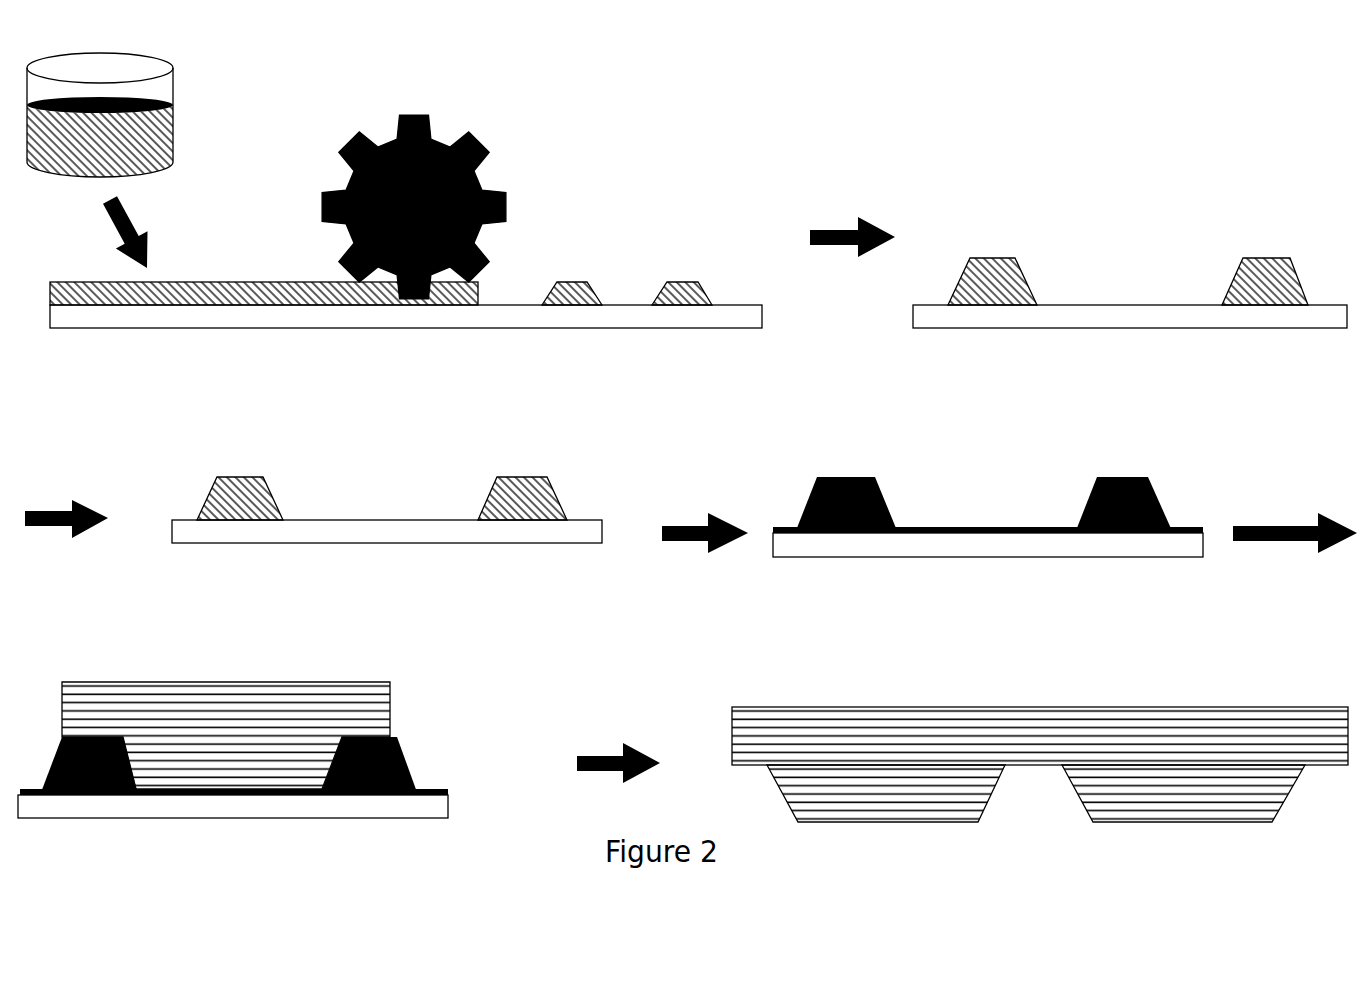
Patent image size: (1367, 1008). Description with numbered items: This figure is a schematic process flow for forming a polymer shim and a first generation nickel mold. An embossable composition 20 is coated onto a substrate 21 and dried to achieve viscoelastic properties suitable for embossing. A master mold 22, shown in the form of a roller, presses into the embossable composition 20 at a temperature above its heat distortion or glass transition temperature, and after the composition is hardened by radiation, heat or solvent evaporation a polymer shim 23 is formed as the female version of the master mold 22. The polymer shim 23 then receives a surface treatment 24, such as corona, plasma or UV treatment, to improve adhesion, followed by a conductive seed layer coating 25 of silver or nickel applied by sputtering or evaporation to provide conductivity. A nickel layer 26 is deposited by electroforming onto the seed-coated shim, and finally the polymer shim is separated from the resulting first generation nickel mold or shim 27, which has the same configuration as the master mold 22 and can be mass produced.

The embossable composition 20 is at (252, 178).
The substrate 21 is at (270, 315).
The master mold 22 is at (453, 108).
The polymer shim 23 is at (1153, 248).
The surface treatment 24 is at (318, 487).
The conductive seed layer coating 25 is at (873, 477).
The nickel layer 26 is at (270, 705).
The first generation Ni mold or shim 27 is at (1030, 717).